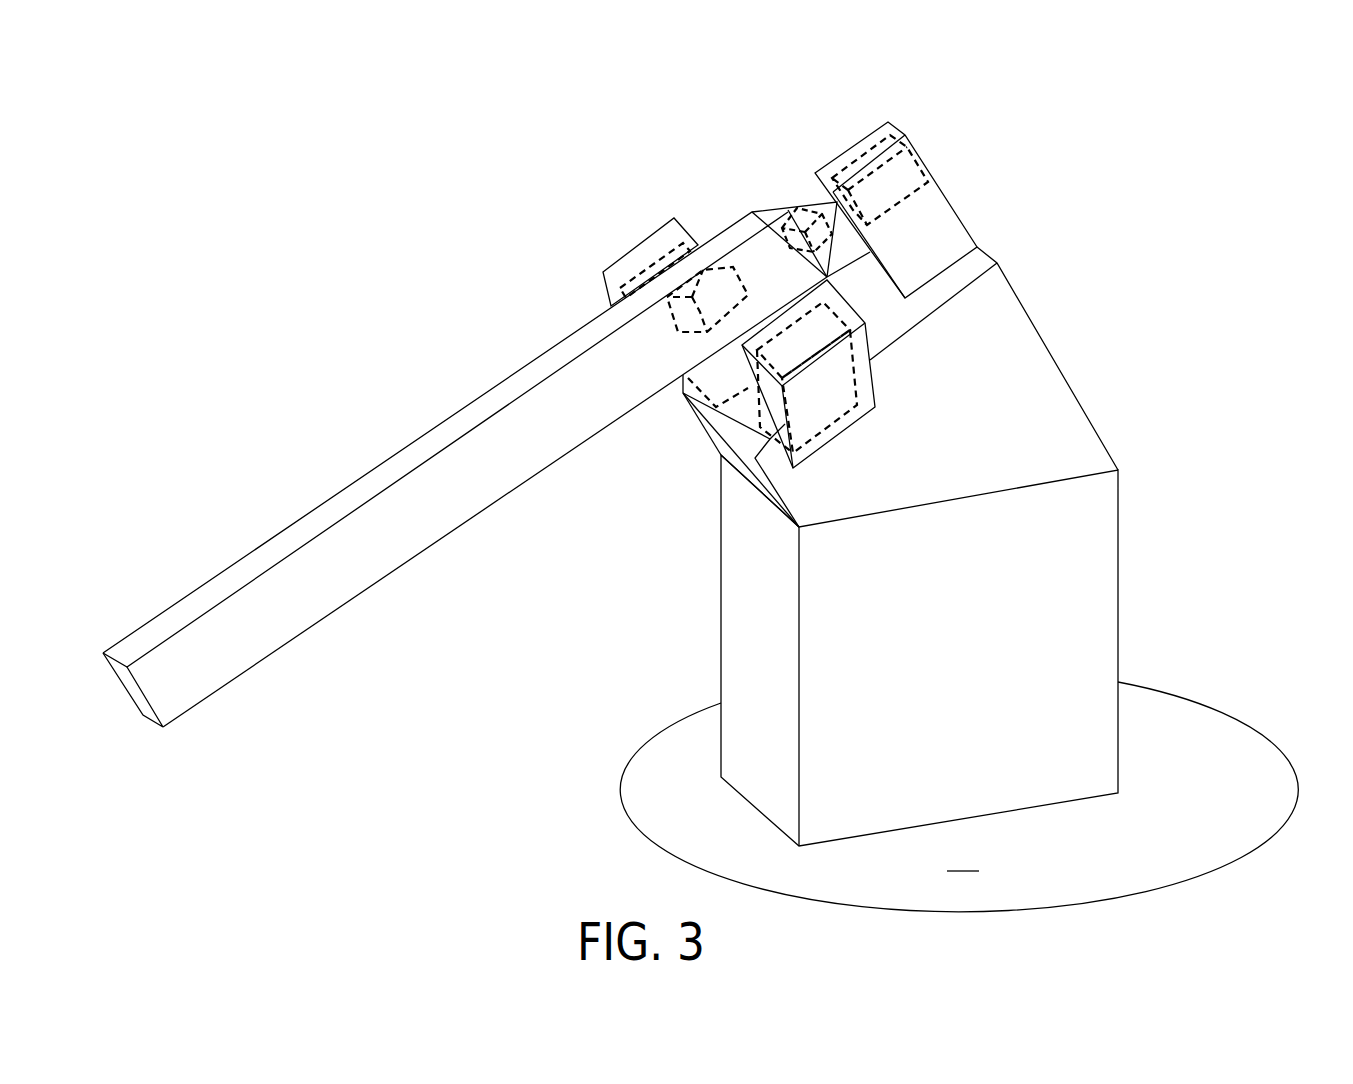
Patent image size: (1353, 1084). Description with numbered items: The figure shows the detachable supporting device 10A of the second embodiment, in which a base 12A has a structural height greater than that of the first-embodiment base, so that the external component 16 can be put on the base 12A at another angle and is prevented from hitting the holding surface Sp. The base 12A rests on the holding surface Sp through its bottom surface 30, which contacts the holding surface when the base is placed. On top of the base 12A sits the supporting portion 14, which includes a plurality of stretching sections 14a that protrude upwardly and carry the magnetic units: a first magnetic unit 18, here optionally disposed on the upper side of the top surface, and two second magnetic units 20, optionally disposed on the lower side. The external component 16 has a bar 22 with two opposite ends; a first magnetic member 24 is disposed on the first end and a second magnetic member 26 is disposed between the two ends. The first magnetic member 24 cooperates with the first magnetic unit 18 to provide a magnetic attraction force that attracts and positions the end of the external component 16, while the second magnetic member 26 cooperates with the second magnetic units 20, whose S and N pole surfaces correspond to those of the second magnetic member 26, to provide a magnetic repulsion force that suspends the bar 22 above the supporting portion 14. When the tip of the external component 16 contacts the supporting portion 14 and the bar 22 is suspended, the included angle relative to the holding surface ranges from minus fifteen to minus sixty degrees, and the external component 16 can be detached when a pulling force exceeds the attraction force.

The detachable supporting device 10A is at (246, 227).
The base 12A is at (1043, 405).
The supporting portion 14 is at (802, 340).
The stretching section 14a is at (605, 288).
The external component 16 is at (382, 502).
The first magnetic unit 18 is at (878, 192).
The second magnetic unit 20 is at (653, 267).
The bar 22 is at (366, 569).
The first magnetic member 24 is at (790, 212).
The second magnetic member 26 is at (713, 282).
The bottom surface 30 is at (1024, 811).